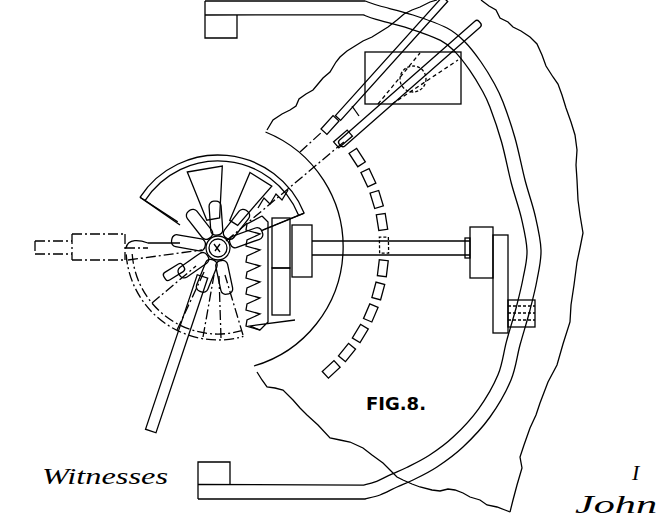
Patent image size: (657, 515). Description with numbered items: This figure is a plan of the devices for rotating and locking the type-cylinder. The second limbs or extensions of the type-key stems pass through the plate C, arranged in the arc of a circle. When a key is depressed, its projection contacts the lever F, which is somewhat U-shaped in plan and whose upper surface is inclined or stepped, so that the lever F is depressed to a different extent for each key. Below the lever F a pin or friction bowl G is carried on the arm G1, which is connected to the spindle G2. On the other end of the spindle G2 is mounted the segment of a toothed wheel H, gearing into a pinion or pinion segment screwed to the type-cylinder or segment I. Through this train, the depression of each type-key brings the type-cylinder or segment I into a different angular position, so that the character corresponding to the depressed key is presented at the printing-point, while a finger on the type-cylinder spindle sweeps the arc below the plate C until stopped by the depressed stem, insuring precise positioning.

The lever F is at (532, 226).
The plate C is at (332, 255).
The pawl lever P is at (350, 118).
The spindle G2 is at (407, 247).
The arm G1 is at (491, 284).
The pin or friction bowl G is at (530, 313).
The segment of a toothed wheel H is at (312, 313).
The type-cylinder or segment I is at (197, 146).